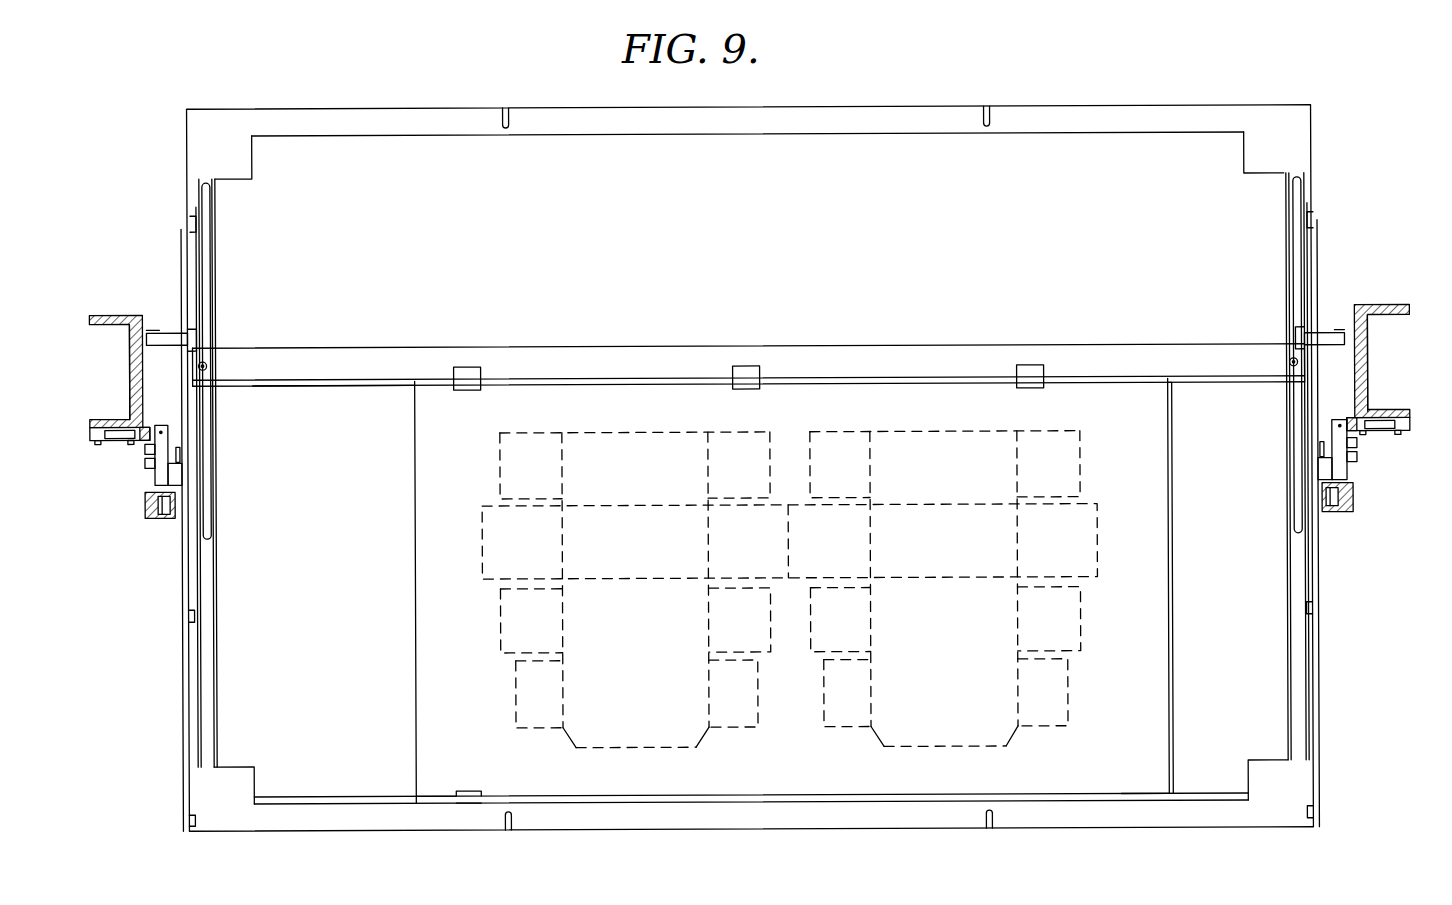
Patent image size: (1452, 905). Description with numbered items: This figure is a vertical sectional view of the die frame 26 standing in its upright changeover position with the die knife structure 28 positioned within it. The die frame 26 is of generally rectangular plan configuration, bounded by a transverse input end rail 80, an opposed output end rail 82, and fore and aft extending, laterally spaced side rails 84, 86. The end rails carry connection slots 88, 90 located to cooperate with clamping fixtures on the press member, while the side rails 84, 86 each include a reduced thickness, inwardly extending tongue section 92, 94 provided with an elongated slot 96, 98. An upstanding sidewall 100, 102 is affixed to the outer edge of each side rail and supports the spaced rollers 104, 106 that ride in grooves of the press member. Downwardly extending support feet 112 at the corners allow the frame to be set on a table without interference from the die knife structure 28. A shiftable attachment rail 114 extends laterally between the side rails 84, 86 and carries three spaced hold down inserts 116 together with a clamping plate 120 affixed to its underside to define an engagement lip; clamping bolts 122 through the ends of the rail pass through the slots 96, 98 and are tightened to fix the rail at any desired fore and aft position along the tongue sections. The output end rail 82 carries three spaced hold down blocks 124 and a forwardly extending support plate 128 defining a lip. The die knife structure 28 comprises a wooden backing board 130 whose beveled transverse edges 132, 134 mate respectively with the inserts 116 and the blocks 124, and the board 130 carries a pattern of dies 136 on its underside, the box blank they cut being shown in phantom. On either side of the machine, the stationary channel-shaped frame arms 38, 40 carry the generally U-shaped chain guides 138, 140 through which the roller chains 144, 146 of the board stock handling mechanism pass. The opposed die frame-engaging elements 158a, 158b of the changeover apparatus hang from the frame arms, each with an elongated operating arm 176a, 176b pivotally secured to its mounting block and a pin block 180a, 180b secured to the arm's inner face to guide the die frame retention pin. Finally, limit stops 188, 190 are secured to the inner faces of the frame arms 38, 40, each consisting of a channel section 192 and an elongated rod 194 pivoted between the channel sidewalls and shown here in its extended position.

The die frame 26 is at (838, 105).
The die knife structure 28 is at (410, 505).
The frame arm 38 is at (130, 313).
The frame arm 40 is at (1378, 307).
The input end rail 80 is at (760, 127).
The output end rail 82 is at (695, 821).
The side rail 84 is at (206, 728).
The side rail 86 is at (1297, 640).
The connection slot 88 is at (507, 112).
The connection slot 90 is at (507, 826).
The tongue section 92 is at (211, 263).
The tongue section 94 is at (1293, 513).
The elongated slot 96 is at (206, 214).
The elongated slot 98 is at (1298, 214).
The sidewall 100 is at (182, 686).
The sidewall 102 is at (1318, 706).
The roller 104 is at (196, 611).
The roller 106 is at (1306, 606).
The support feet 112 is at (247, 152).
The attachment rail 114 is at (812, 348).
The hold down insert 116 is at (467, 362).
The clamping plate 120 is at (352, 388).
The clamping bolt 122 is at (207, 364).
The hold down block 124 is at (468, 795).
The support plate 128 is at (375, 798).
The backing board 130 is at (420, 568).
The beveled transverse edge 132 is at (1128, 795).
The beveled transverse edge 134 is at (1080, 384).
The dies 136 is at (1100, 560).
The chain guide 138 is at (145, 507).
The chain guide 140 is at (1352, 505).
The roller chain 144 is at (168, 514).
The roller chain 146 is at (1330, 510).
The die frame-engaging element 158a is at (140, 455).
The die frame-engaging element 158b is at (1357, 450).
The operating arm 176a is at (163, 440).
The operating arm 176b is at (1338, 435).
The pin block 180a is at (175, 472).
The pin block 180b is at (1320, 468).
The limit stop 188 is at (164, 328).
The limit stop 190 is at (1332, 330).
The channel section 192 is at (141, 350).
The rod 194 is at (195, 345).